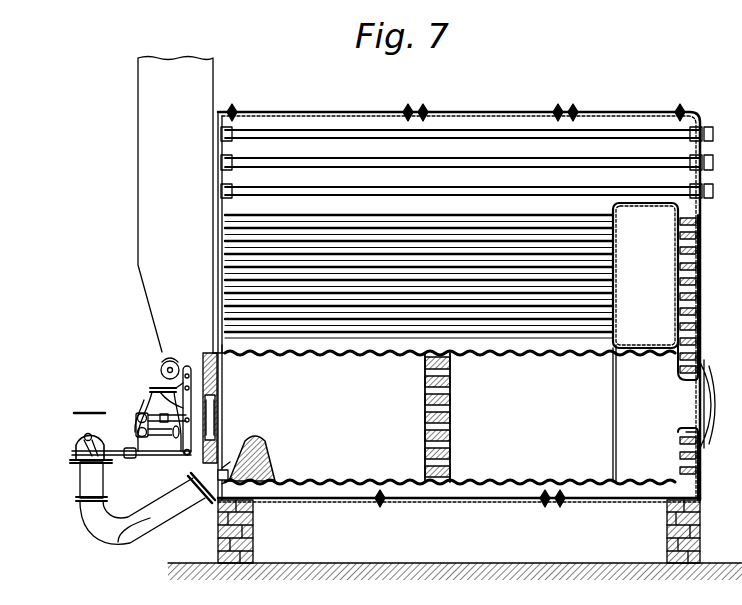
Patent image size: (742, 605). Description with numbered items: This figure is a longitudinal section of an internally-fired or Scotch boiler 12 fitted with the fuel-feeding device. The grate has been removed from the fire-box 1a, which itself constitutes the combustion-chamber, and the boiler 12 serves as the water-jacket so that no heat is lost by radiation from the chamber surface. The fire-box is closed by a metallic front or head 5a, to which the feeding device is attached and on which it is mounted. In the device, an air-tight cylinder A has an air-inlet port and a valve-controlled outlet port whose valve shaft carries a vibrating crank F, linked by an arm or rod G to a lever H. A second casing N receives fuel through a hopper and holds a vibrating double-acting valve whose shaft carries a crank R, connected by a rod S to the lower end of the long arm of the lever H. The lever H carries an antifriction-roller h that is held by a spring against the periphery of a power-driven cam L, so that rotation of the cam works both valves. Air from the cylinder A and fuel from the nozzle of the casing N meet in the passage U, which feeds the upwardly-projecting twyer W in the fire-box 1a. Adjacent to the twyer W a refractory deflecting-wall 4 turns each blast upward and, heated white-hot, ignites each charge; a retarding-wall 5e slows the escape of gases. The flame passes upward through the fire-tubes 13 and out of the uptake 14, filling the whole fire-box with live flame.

The uptake 14 is at (175, 205).
The boiler 12 is at (497, 518).
The fire-tubes 13 is at (590, 248).
The fire-box 1a is at (450, 417).
The retarding-wall 5e is at (452, 416).
The deflecting-wall 4 is at (276, 458).
The twyer W is at (227, 467).
The head 5a is at (137, 537).
The passage U is at (80, 482).
The rod S is at (70, 461).
The casing N is at (77, 424).
The crank R is at (84, 438).
The arm or rod G is at (148, 402).
The lever H is at (167, 396).
The air-tight cylinder A is at (130, 409).
The vibrating crank F is at (136, 428).
The cam L is at (161, 370).
The antifriction-roller h is at (187, 402).